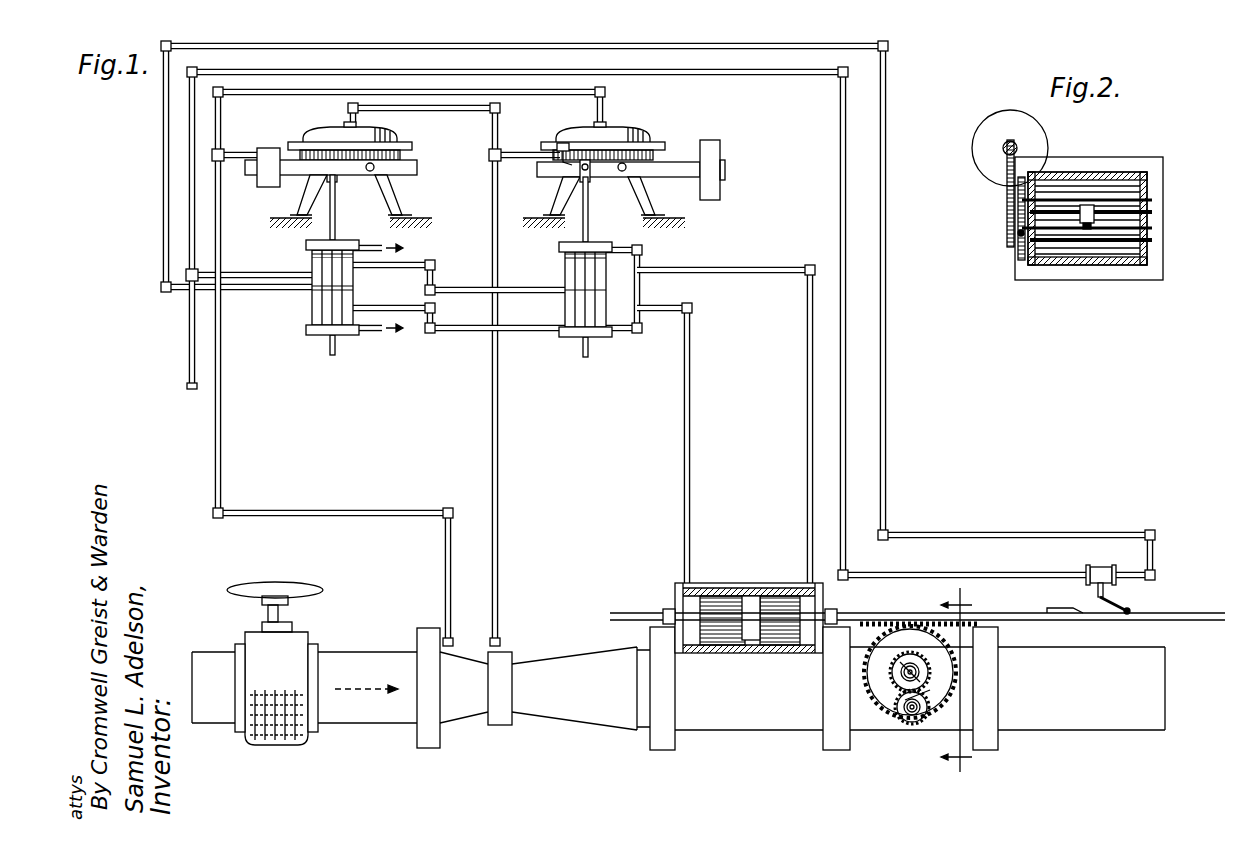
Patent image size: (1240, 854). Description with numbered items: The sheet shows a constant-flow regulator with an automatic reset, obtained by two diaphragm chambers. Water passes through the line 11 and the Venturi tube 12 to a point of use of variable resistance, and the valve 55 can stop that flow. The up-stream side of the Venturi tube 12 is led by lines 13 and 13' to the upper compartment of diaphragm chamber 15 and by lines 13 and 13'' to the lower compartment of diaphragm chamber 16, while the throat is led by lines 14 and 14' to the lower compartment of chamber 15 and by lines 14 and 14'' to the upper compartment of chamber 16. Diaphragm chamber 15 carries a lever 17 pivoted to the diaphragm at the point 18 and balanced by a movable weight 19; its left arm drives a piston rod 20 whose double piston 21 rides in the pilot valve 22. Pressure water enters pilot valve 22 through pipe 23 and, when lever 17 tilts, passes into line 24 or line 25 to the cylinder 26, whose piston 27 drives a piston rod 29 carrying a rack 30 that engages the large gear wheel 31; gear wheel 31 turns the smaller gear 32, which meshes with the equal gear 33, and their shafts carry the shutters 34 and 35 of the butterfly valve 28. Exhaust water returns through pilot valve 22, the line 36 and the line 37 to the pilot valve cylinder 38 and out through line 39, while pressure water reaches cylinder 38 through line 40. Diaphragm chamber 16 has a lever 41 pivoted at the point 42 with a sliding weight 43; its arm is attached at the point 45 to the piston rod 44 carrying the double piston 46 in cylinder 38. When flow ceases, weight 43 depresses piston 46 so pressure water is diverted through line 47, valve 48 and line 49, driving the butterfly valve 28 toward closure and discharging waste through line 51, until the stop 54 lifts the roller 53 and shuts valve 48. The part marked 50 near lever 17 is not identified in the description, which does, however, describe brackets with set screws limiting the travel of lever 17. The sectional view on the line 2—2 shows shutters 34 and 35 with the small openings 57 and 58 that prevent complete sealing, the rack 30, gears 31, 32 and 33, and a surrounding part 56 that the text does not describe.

In FIG. 1, the line 11 is at (348, 748).
In FIG. 1, the Venturi tube 12 is at (583, 722).
In FIG. 1, the line 13 is at (333, 367).
In FIG. 1, the line 13' is at (409, 108).
In FIG. 1, the line 13'' is at (241, 138).
In FIG. 1, the line 14 is at (515, 375).
In FIG. 1, the line 14' is at (527, 173).
In FIG. 1, the line 14'' is at (424, 122).
In FIG. 1, the diaphragm chamber 15 is at (632, 128).
In FIG. 1, the diaphragm chamber 16 is at (392, 135).
In FIG. 1, the lever 17 is at (676, 162).
In FIG. 1, the point 18 is at (627, 168).
In FIG. 1, the movable weight 19 is at (721, 185).
In FIG. 1, the piston rod 20 is at (582, 200).
In FIG. 1, the double piston 21 is at (566, 272).
In FIG. 1, the pilot valve 22 is at (572, 244).
In FIG. 1, the pipe 23 is at (390, 268).
In FIG. 1, the line 24 is at (713, 268).
In FIG. 1, the line 25 is at (666, 306).
In FIG. 1, the cylinder 26 is at (720, 596).
In FIG. 1, the piston 27 is at (765, 596).
In FIG. 2, the piston 27 is at (1037, 132).
In FIG. 1, the butterfly valve 28 is at (929, 728).
In FIG. 2, the butterfly valve 28 is at (1150, 229).
In FIG. 1, the piston rod 29 is at (855, 613).
In FIG. 1, the rack 30 is at (916, 620).
In FIG. 2, the rack 30 is at (1004, 152).
In FIG. 1, the large gear wheel 31 is at (885, 714).
In FIG. 2, the large gear wheel 31 is at (1015, 247).
In FIG. 1, the smaller gear 32 is at (925, 668).
In FIG. 2, the smaller gear 32 is at (1020, 201).
In FIG. 1, the gear 33 is at (925, 716).
In FIG. 2, the gear 33 is at (1017, 233).
In FIG. 1, the shutter 34 is at (928, 678).
In FIG. 2, the shutter 34 is at (1150, 212).
In FIG. 1, the shutter 35 is at (930, 700).
In FIG. 2, the shutter 35 is at (1150, 244).
In FIG. 1, the line 36 is at (641, 249).
In FIG. 1, the line 37 is at (540, 331).
In FIG. 1, the pilot valve cylinder 38 is at (345, 242).
In FIG. 1, the line 39 is at (376, 331).
In FIG. 1, the line 40 is at (280, 274).
In FIG. 1, the lever 41 is at (305, 176).
In FIG. 1, the point 42 is at (376, 167).
In FIG. 1, the sliding weight 43 is at (262, 188).
In FIG. 1, the piston rod 44 is at (336, 208).
In FIG. 1, the point 45 is at (332, 160).
In FIG. 1, the double piston 46 is at (310, 250).
In FIG. 1, the line 47 is at (189, 210).
In FIG. 1, the valve 48 is at (1110, 588).
In FIG. 1, the line 49 is at (290, 46).
In FIG. 1, the adjusting clamp 50 is at (572, 161).
In FIG. 1, the line 51 is at (405, 247).
In FIG. 1, the roller 53 is at (1131, 612).
In FIG. 1, the stop 54 is at (1080, 616).
In FIG. 1, the valve 55 is at (290, 745).
In FIG. 2, the gear housing 56 is at (1148, 183).
In FIG. 2, the small opening 57 is at (1084, 205).
In FIG. 2, the small opening 58 is at (1087, 230).
In FIG. 1, the section line 2 is at (956, 685).